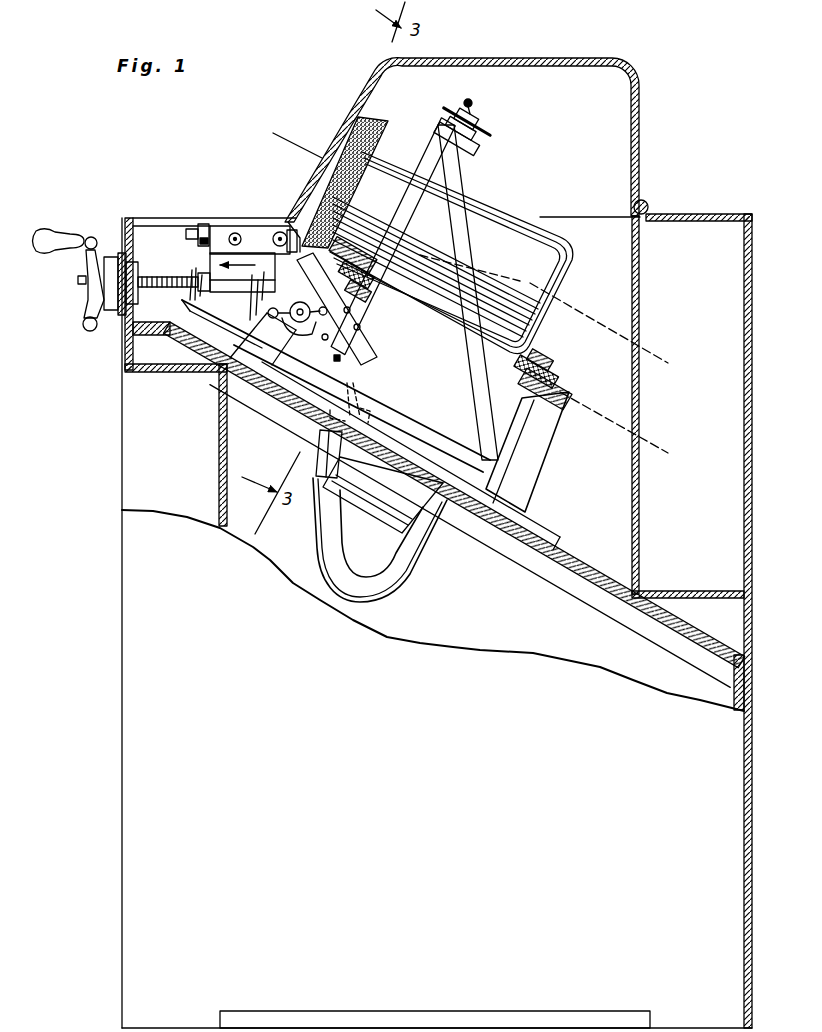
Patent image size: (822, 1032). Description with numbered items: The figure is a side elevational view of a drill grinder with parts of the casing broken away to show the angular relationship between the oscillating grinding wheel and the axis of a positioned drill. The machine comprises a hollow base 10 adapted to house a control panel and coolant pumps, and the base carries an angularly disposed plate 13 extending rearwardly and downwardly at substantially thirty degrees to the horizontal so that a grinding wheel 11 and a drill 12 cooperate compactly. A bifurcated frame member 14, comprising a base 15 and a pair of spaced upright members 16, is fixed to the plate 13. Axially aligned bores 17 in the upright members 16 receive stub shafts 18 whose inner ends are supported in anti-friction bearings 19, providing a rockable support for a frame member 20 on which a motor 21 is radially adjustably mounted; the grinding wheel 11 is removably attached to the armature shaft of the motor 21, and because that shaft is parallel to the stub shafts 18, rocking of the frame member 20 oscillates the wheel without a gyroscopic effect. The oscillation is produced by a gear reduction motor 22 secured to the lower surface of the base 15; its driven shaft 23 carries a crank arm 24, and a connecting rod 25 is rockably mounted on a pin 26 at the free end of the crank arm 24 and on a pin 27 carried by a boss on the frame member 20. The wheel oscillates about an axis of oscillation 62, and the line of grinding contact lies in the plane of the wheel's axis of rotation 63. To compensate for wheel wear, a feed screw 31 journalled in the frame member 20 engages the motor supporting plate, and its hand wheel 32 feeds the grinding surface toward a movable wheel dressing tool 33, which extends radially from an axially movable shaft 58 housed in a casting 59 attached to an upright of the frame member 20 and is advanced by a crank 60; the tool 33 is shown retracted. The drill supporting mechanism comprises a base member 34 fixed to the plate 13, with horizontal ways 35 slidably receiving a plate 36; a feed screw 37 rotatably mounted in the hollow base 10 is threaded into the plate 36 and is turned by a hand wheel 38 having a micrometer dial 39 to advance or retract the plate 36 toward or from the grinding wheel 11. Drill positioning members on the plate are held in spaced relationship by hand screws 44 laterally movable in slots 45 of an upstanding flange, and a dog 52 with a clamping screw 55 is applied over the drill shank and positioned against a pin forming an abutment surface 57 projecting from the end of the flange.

The hollow base 10 is at (121, 588).
The grinding wheel 11 is at (372, 126).
The drill 12 is at (186, 232).
The angularly disposed plate 13 is at (298, 412).
The bifurcated frame member 14 is at (548, 487).
The base 15 is at (430, 457).
The spaced upright members 16 is at (293, 371).
The axially aligned bores 17 is at (568, 395).
The stub shafts 18 is at (556, 380).
The anti-friction bearings 19 is at (553, 359).
The frame member 20 is at (428, 156).
The motor 21 is at (548, 285).
The motor 22 is at (395, 584).
The driven shaft 23 is at (383, 495).
The crank arm 24 is at (322, 448).
The connecting rod 25 is at (385, 331).
The pin 26 is at (366, 427).
The pin 27 is at (470, 257).
The feed screw 31 is at (478, 116).
The hand wheel 32 is at (465, 102).
The wheel dressing tool 33 is at (284, 241).
The base member 34 is at (263, 339).
The ways 35 is at (198, 282).
The plate 36 is at (223, 308).
The feed screw 37 is at (167, 290).
The hand wheel 38 is at (58, 254).
The micrometer dial 39 is at (100, 306).
The hand screws 44 is at (268, 232).
The slots 45 is at (232, 232).
The dog 52 is at (202, 224).
The clamping screw 55 is at (190, 228).
The abutment surface 57 is at (200, 241).
The axially movable shaft 58 is at (240, 262).
The casting 59 is at (386, 347).
The crank 60 is at (290, 318).
The axis of oscillation 62 is at (654, 444).
The axis of rotation 63 is at (654, 348).